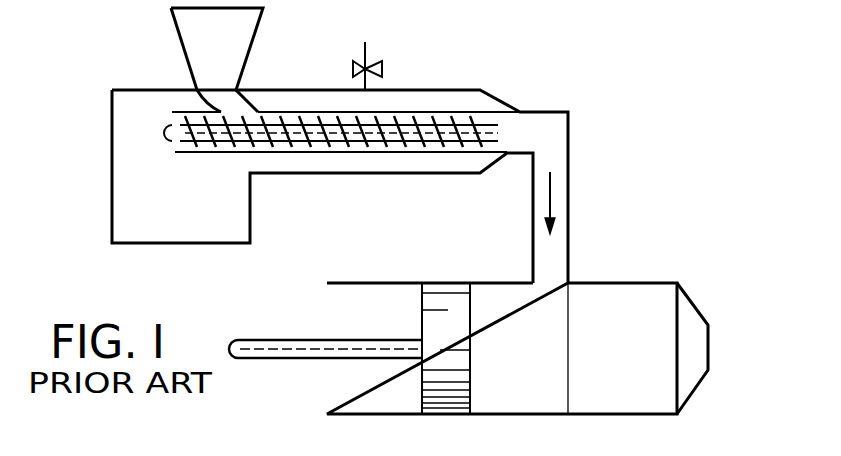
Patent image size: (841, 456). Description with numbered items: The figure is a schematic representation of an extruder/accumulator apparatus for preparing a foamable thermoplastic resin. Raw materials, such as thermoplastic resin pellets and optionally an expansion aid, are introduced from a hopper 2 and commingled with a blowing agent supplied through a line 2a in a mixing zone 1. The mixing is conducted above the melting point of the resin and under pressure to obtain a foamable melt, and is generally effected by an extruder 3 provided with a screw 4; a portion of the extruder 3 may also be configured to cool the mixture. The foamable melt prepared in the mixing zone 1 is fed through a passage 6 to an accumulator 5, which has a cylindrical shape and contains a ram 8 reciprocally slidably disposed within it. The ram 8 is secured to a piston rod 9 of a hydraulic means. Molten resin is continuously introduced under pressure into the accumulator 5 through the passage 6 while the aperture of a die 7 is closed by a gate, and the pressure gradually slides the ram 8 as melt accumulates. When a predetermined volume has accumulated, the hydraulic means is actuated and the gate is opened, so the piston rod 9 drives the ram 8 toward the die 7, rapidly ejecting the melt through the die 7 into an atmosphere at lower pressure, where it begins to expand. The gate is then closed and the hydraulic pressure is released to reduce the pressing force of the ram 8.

The mixing zone 1 is at (427, 121).
The hopper 2 is at (181, 38).
The line 2a is at (366, 50).
The extruder 3 is at (318, 90).
The screw 4 is at (379, 153).
The accumulator 5 is at (618, 283).
The passage 6 is at (569, 183).
The die 7 is at (710, 338).
The ram 8 is at (440, 305).
The piston rod 9 is at (263, 340).